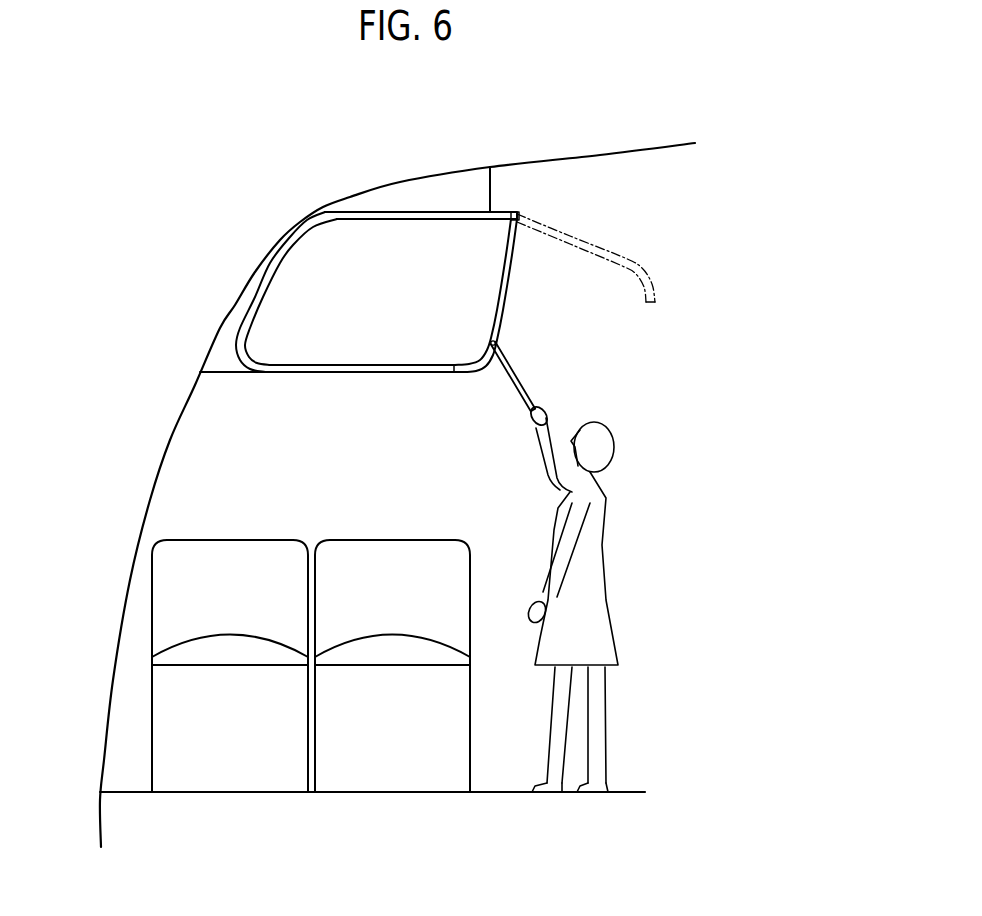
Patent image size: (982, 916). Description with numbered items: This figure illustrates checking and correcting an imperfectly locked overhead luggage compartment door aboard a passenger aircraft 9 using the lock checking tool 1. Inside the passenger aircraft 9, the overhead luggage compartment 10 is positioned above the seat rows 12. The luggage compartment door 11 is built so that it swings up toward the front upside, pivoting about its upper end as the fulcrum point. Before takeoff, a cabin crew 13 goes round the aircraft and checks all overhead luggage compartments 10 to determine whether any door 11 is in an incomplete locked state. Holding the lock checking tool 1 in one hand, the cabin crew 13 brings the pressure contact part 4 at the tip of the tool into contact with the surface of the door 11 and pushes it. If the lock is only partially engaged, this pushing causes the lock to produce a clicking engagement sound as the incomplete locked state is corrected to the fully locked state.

The lock checking tool 1 is at (523, 382).
The pressure contact part 4 is at (494, 344).
The passenger aircraft 9 is at (167, 440).
The overhead luggage compartment 10 is at (355, 348).
The luggage compartment door 11 is at (496, 281).
The seat rows 12 is at (225, 565).
The cabin crew 13 is at (595, 578).